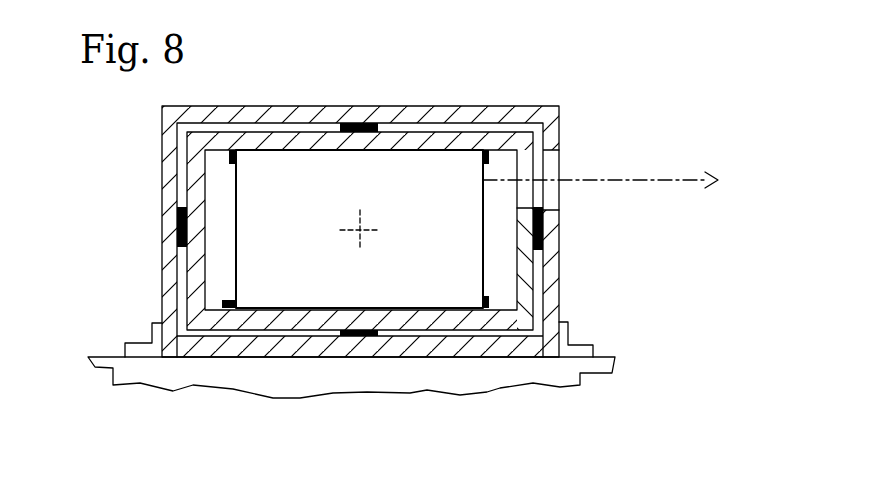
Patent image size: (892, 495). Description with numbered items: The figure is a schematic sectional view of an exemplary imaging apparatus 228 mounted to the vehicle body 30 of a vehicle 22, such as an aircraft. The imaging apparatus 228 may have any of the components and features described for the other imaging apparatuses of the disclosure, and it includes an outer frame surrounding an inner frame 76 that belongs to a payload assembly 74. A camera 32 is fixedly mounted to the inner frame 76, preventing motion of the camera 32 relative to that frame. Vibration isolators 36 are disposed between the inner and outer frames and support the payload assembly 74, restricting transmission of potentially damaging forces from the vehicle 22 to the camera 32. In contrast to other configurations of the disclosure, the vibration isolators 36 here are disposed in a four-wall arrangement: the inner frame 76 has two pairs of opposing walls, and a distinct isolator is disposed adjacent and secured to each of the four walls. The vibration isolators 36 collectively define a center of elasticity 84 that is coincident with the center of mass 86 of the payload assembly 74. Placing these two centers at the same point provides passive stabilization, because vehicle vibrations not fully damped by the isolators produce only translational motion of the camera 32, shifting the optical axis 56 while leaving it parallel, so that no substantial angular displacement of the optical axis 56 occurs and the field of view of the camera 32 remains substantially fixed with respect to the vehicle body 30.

The imaging apparatus 228 is at (410, 239).
The payload assembly 74 is at (183, 177).
The inner frame 76 is at (186, 297).
The vibration isolators 36 is at (357, 122).
The camera 32 is at (239, 236).
The center of elasticity 84 is at (358, 236).
The center of mass 86 is at (362, 236).
The optical axis 56 is at (625, 177).
The vehicle body 30 is at (457, 396).
The vehicle 22 is at (351, 407).